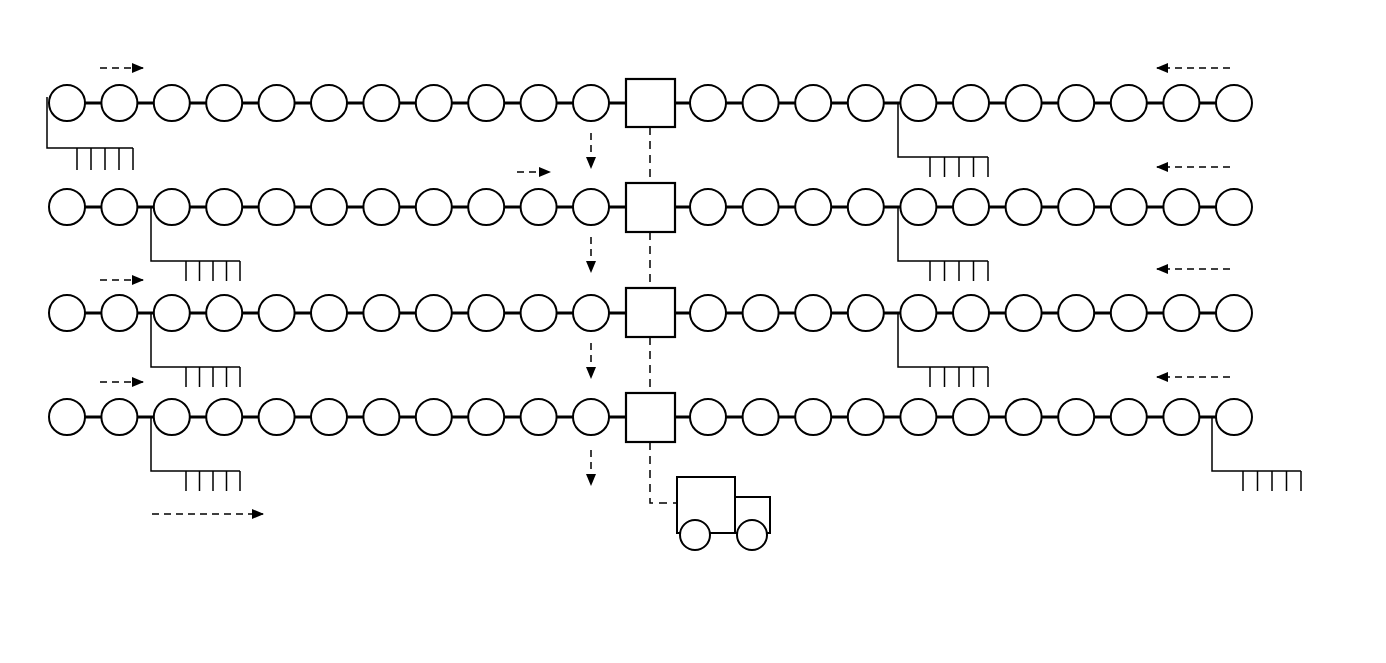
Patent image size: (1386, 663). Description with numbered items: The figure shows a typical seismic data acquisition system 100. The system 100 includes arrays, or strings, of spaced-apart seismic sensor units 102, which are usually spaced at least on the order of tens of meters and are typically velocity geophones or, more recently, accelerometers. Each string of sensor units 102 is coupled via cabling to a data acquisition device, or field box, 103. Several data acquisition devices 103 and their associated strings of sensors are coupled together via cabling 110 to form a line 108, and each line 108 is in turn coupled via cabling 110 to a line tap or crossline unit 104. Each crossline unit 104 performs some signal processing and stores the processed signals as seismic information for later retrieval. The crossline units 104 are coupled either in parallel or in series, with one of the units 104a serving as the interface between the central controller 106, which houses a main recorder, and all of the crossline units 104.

The seismic data acquisition system 100 is at (815, 53).
The seismic sensor unit 102 is at (133, 170).
The data acquisition device 103 is at (1234, 121).
The crossline unit 104 is at (672, 127).
The crossline unit serving as interface 104a is at (672, 393).
The central controller 106 is at (770, 497).
The line 108 is at (583, 124).
The cabling 110 is at (250, 100).